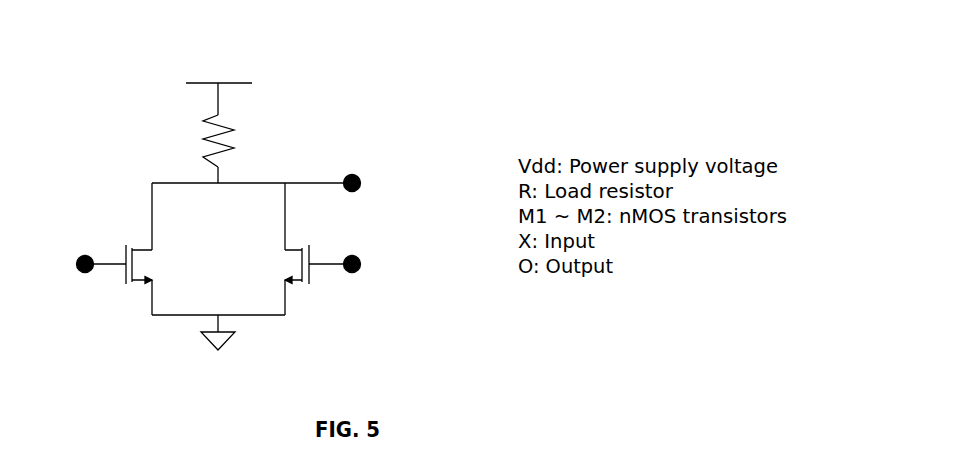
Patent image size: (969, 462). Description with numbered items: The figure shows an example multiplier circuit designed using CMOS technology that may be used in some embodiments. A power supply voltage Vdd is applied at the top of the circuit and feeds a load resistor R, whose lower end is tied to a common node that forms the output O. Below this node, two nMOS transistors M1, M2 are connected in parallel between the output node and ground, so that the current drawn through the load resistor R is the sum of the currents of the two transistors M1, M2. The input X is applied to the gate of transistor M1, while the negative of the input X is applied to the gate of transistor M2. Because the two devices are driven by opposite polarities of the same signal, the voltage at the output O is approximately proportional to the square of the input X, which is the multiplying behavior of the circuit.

The power supply voltage Vdd is at (241, 93).
The load resistor R is at (234, 149).
The nMOS transistor M1 is at (159, 264).
The nMOS transistor M2 is at (324, 263).
The input X is at (89, 256).
The output O is at (372, 182).